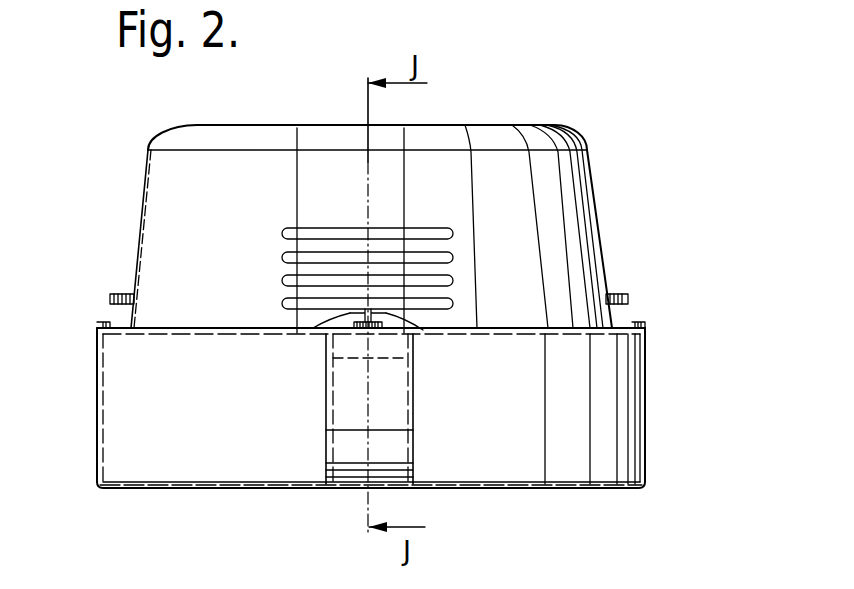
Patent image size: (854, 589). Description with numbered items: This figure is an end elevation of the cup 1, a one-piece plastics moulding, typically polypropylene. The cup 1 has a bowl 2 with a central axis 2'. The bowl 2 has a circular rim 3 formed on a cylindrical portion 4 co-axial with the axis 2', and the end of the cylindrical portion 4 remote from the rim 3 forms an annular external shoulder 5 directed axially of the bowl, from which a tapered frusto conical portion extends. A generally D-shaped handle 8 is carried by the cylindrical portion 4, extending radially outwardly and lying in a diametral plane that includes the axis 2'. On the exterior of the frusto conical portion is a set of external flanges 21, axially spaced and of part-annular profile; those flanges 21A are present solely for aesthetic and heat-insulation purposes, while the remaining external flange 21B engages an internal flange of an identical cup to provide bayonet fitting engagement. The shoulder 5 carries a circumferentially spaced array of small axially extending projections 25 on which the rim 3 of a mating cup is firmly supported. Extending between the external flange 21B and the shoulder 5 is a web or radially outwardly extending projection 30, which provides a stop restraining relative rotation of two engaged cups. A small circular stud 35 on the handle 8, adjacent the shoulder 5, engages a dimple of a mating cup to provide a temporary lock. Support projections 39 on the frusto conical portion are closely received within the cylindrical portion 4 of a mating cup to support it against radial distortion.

The cup 1 is at (138, 126).
The bowl 2 is at (420, 226).
The central axis 2' is at (375, 84).
The circular rim 3 is at (535, 490).
The cylindrical portion 4 is at (97, 433).
The annular external shoulder 5 is at (222, 328).
The handle 8 is at (345, 455).
The set of external flanges 21 is at (376, 244).
The external flanges 21A is at (520, 243).
The external flange 21B is at (520, 313).
The axially extending projections 25 is at (103, 321).
The projection 30 is at (355, 314).
The stud 35 is at (383, 318).
The support projections 39 is at (110, 298).